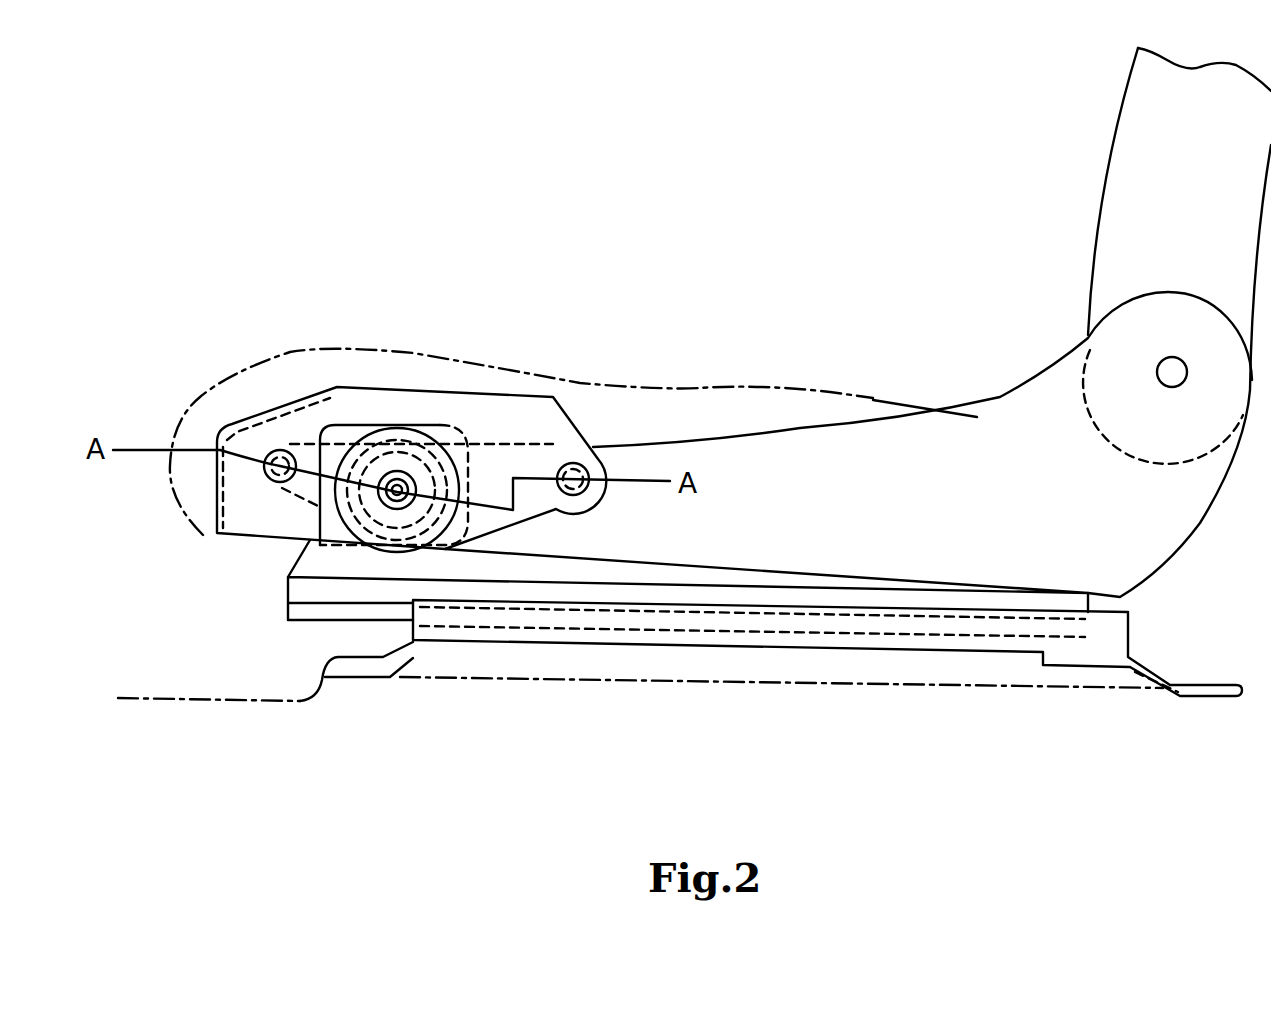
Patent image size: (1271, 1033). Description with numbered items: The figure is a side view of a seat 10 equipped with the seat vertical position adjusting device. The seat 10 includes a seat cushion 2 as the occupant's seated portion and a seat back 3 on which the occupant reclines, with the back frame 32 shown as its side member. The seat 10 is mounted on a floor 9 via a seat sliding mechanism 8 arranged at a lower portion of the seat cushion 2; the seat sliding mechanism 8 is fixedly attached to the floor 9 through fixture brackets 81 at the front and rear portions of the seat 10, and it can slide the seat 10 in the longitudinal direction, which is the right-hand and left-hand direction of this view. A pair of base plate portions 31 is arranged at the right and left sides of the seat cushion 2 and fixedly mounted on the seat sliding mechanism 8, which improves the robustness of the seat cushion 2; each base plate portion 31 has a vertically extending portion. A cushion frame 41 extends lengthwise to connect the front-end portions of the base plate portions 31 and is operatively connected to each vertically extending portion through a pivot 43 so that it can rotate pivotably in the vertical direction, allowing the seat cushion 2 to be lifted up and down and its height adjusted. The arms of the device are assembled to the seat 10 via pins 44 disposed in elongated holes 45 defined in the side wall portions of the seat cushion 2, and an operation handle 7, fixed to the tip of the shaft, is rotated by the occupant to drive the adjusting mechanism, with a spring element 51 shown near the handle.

The seat cushion 2 is at (445, 372).
The seat back 3 is at (1053, 308).
The operation handle 7 is at (342, 470).
The seat sliding mechanism 8 is at (878, 658).
The floor 9 is at (257, 698).
The seat 10 is at (782, 313).
The base plate portion 31 is at (893, 460).
The seat back frame 32 is at (1132, 160).
The cushion frame 41 is at (328, 392).
The pivot 43 is at (580, 465).
The pin 44 is at (268, 457).
The elongated hole 45 is at (323, 440).
The cable 51 is at (305, 490).
The fixture bracket 81 is at (357, 667).